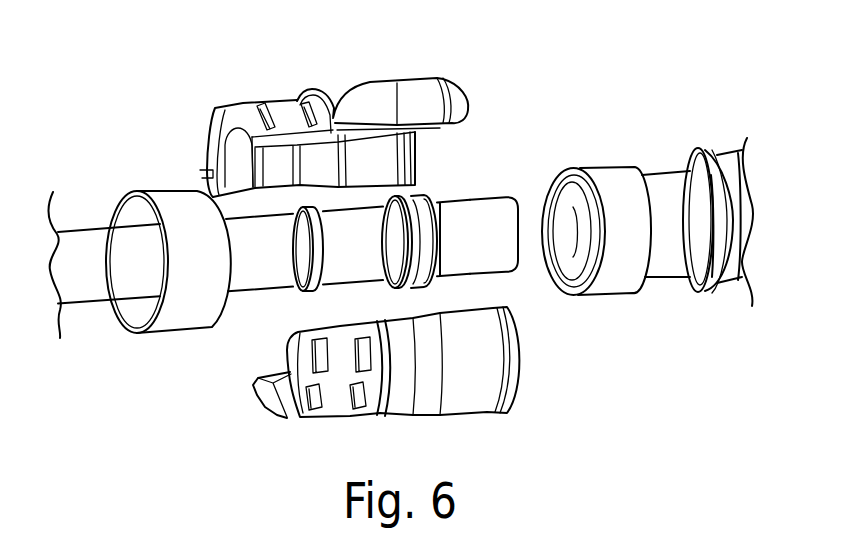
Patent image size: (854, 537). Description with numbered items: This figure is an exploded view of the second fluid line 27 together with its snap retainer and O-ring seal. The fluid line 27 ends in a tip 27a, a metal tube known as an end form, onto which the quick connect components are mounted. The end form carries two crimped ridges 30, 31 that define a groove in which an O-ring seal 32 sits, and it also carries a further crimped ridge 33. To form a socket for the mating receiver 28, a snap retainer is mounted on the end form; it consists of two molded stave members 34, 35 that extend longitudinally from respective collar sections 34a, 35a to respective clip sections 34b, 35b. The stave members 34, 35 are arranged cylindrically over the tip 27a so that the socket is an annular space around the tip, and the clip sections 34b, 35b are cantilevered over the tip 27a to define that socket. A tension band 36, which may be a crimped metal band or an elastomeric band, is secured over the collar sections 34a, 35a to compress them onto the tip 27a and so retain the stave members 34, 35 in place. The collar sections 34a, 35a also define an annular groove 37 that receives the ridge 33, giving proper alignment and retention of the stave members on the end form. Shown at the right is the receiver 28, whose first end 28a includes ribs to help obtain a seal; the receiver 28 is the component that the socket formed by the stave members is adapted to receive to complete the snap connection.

The fluid line 27 is at (92, 312).
The tip 27a is at (488, 196).
The receiver 28 is at (647, 231).
The first end 28a is at (608, 175).
The crimped ridge 30 is at (441, 276).
The crimped ridge 31 is at (385, 286).
The O-ring seal 32 is at (420, 197).
The crimped ridge 33 is at (299, 291).
The stave member 34 is at (320, 108).
The collar section 34a is at (243, 102).
The clip section 34b is at (417, 78).
The stave member 35 is at (395, 387).
The collar section 35a is at (312, 421).
The clip section 35b is at (469, 416).
The tension band 36 is at (153, 190).
The annular groove 37 is at (250, 173).